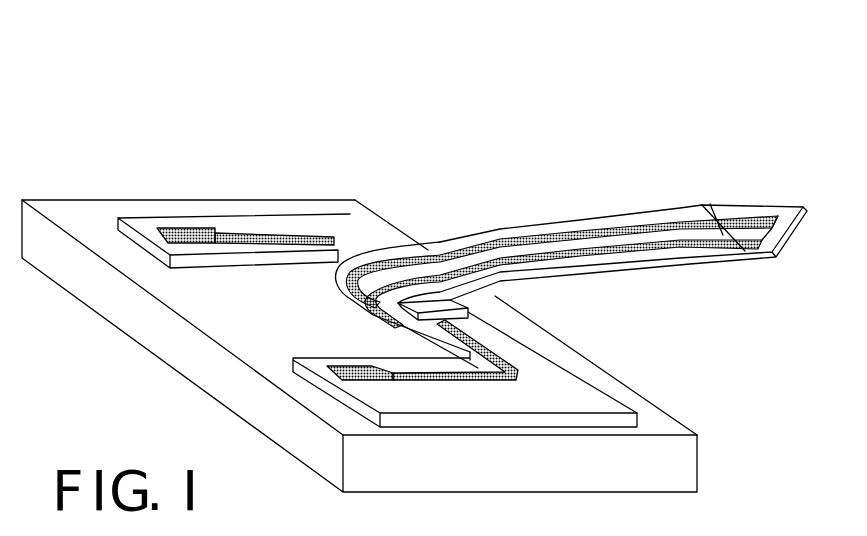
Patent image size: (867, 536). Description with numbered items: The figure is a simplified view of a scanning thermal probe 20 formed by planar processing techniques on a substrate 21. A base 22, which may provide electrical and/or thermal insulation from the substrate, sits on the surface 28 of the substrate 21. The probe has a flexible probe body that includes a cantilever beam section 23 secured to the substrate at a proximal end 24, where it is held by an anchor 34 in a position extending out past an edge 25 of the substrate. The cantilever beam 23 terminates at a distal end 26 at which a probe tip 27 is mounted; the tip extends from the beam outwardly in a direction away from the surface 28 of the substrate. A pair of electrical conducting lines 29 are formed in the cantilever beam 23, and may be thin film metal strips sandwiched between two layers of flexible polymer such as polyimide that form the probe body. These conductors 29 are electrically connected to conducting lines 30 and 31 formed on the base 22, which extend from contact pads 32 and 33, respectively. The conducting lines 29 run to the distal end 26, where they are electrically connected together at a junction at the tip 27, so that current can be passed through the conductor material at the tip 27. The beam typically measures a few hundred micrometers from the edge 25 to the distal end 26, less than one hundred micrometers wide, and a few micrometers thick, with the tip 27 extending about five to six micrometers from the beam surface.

The thermal probe 20 is at (566, 100).
The substrate 21 is at (678, 462).
The base 22 is at (610, 405).
The cantilever beam section 23 is at (693, 186).
The proximal end 24 is at (436, 252).
The edge of the substrate 25 is at (605, 368).
The distal end 26 is at (748, 250).
The probe tip 27 is at (780, 208).
The surface of the substrate 28 is at (93, 218).
The electrical conducting lines 29 is at (600, 215).
The conducting line 30 is at (440, 378).
The conducting line 31 is at (258, 232).
The contact pad 32 is at (345, 367).
The contact pad 33 is at (200, 238).
The anchor 34 is at (358, 245).